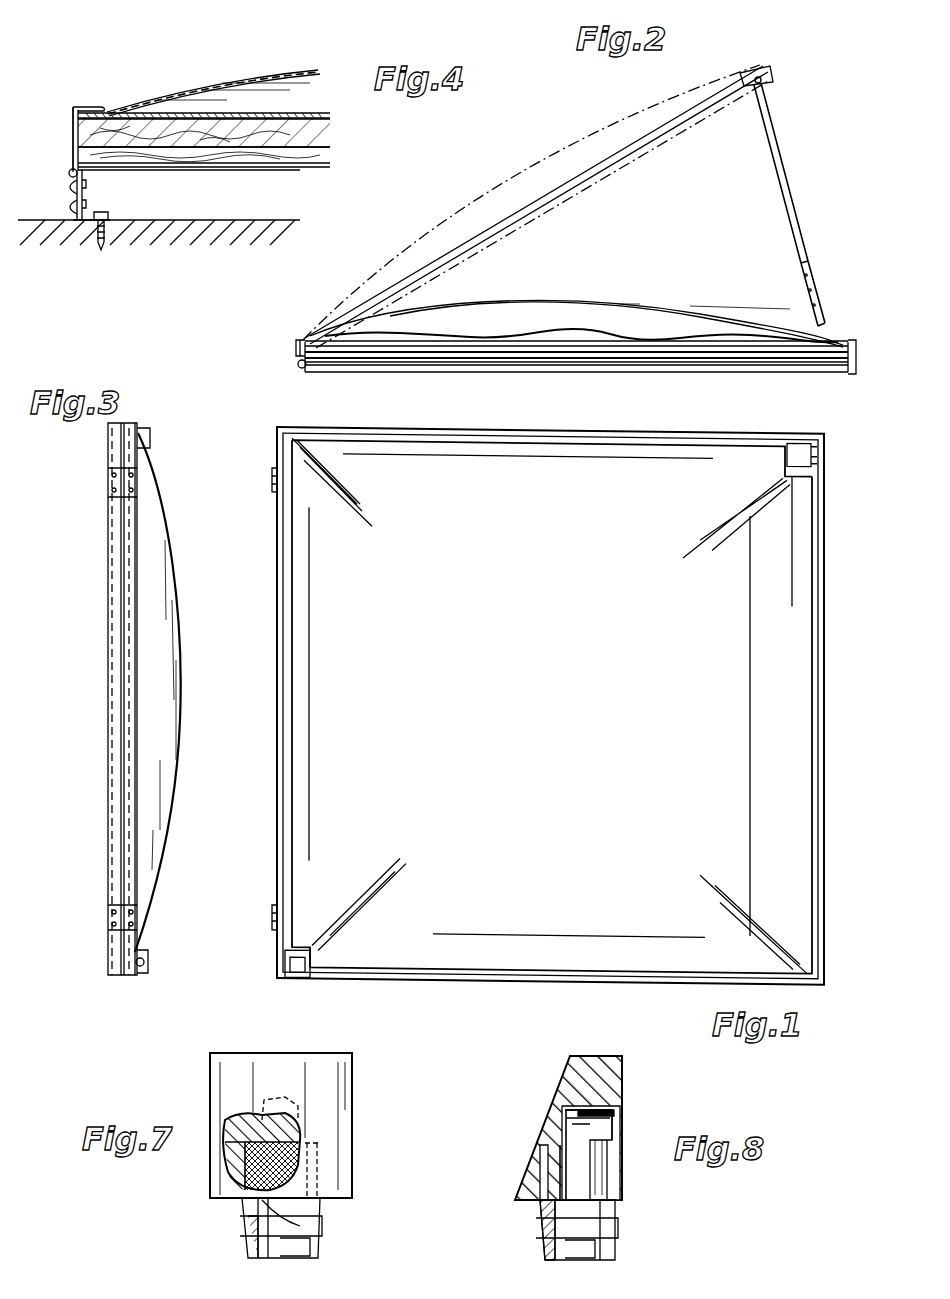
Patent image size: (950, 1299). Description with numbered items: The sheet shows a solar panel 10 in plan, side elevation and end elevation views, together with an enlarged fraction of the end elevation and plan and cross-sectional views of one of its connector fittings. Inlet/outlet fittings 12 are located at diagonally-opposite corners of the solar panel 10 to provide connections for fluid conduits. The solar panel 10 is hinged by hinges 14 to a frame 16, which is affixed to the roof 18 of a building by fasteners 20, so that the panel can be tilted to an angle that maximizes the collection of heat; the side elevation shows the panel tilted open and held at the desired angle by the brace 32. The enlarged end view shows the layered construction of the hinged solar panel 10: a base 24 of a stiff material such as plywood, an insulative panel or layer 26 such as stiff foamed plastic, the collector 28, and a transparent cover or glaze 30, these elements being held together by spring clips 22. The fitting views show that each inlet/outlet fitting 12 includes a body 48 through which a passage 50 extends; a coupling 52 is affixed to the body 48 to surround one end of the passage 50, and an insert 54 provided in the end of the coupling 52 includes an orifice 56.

In FIG. 1, the solar panel 10 is at (509, 957).
In FIG. 3, the inlet/outlet fittings 12 is at (152, 427).
In FIG. 1, the inlet/outlet fittings 12 is at (797, 424).
In FIG. 7, the inlet/outlet fittings 12 is at (372, 1010).
In FIG. 8, the inlet/outlet fittings 12 is at (636, 1050).
In FIG. 4, the hinges 14 is at (69, 174).
In FIG. 2, the hinges 14 is at (300, 366).
In FIG. 3, the hinges 14 is at (140, 484).
In FIG. 1, the hinges 14 is at (272, 480).
In FIG. 4, the frame 16 is at (285, 200).
In FIG. 2, the frame 16 is at (420, 362).
In FIG. 3, the frame 16 is at (108, 572).
In FIG. 4, the roof 18 is at (205, 240).
In FIG. 4, the fasteners 20 is at (91, 238).
In FIG. 4, the spring clips 22 is at (63, 139).
In FIG. 2, the spring clips 22 is at (297, 347).
In FIG. 4, the base 24 is at (322, 157).
In FIG. 2, the base 24 is at (672, 358).
In FIG. 4, the insulative panel 26 is at (312, 142).
In FIG. 2, the insulative panel 26 is at (604, 355).
In FIG. 4, the collector 28 is at (312, 118).
In FIG. 2, the collector 28 is at (650, 350).
In FIG. 4, the transparent cover 30 is at (290, 72).
In FIG. 2, the transparent cover 30 is at (590, 312).
In FIG. 3, the transparent cover 30 is at (162, 600).
In FIG. 1, the transparent cover 30 is at (648, 770).
In FIG. 2, the brace 32 is at (782, 176).
In FIG. 7, the body 48 is at (332, 1092).
In FIG. 8, the body 48 is at (622, 1086).
In FIG. 8, the passage 50 is at (605, 1120).
In FIG. 7, the coupling 52 is at (320, 1222).
In FIG. 8, the coupling 52 is at (618, 1224).
In FIG. 7, the insert 54 is at (252, 1243).
In FIG. 8, the insert 54 is at (550, 1242).
In FIG. 7, the orifice 56 is at (282, 1258).
In FIG. 8, the orifice 56 is at (590, 1258).